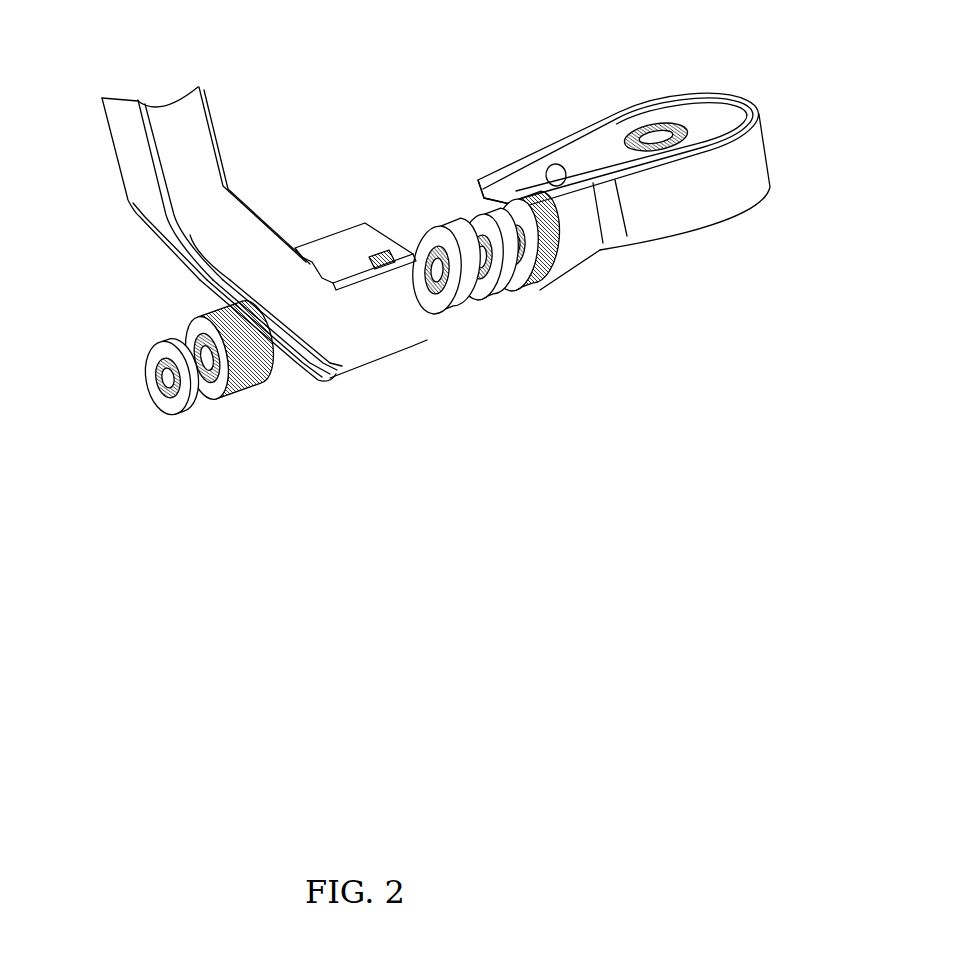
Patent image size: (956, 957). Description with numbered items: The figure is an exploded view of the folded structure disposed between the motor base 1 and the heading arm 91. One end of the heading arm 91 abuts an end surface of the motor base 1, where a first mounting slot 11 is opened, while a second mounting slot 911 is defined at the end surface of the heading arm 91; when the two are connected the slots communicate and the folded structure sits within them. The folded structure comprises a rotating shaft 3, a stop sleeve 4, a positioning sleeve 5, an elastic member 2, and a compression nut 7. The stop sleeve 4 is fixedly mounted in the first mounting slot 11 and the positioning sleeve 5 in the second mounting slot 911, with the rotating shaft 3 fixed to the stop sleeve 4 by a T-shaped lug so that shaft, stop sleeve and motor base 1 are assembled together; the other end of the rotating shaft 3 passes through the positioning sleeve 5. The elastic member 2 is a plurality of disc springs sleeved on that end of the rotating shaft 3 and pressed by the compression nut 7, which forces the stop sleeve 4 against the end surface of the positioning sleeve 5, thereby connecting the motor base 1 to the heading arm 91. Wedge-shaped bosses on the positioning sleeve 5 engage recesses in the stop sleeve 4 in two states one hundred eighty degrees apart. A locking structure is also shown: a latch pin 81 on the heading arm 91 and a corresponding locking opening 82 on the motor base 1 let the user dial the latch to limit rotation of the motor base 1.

The motor base 1 is at (624, 186).
The first mounting slot 11 is at (548, 293).
The elastic member 2 is at (250, 393).
The rotating shaft 3 is at (437, 300).
The stop sleeve 4 is at (520, 292).
The positioning sleeve 5 is at (474, 280).
The compression nut 7 is at (168, 400).
The latch pin 81 is at (378, 260).
The locking opening 82 is at (520, 210).
The heading arm 91 is at (264, 263).
The second mounting slot 911 is at (318, 380).